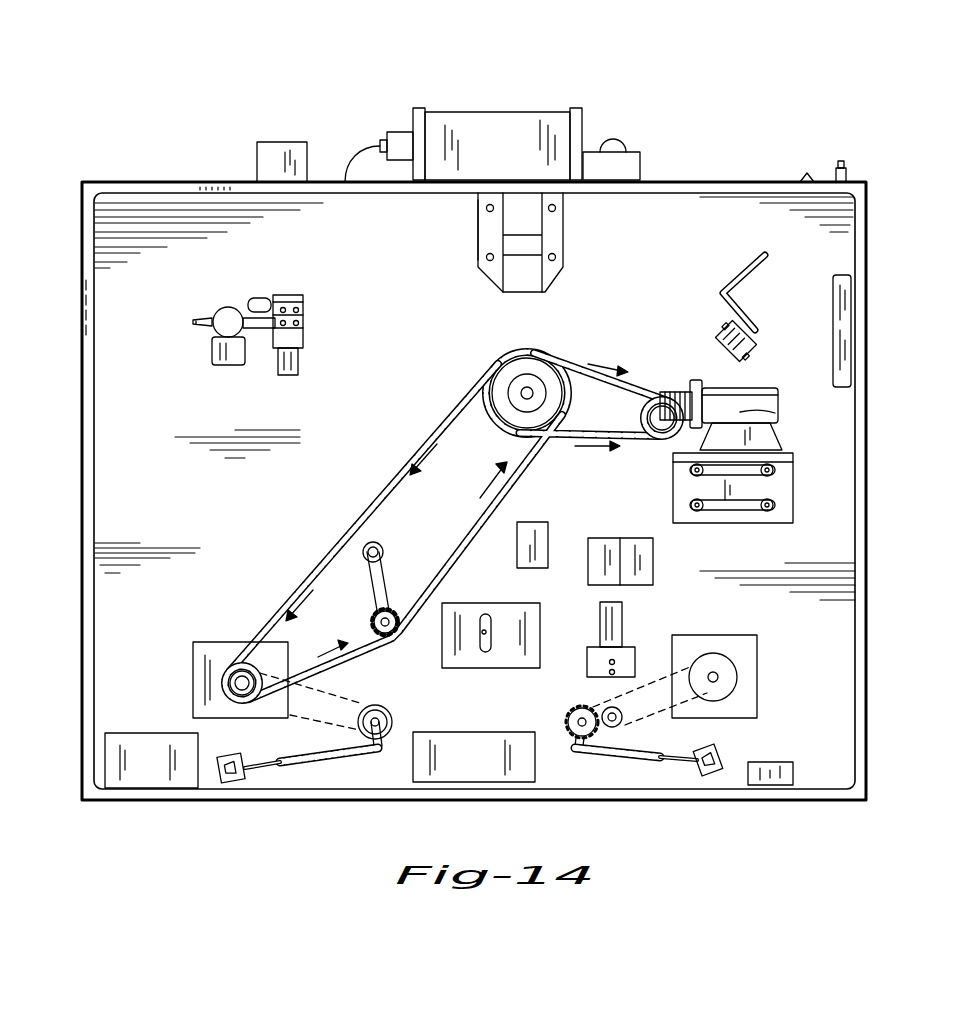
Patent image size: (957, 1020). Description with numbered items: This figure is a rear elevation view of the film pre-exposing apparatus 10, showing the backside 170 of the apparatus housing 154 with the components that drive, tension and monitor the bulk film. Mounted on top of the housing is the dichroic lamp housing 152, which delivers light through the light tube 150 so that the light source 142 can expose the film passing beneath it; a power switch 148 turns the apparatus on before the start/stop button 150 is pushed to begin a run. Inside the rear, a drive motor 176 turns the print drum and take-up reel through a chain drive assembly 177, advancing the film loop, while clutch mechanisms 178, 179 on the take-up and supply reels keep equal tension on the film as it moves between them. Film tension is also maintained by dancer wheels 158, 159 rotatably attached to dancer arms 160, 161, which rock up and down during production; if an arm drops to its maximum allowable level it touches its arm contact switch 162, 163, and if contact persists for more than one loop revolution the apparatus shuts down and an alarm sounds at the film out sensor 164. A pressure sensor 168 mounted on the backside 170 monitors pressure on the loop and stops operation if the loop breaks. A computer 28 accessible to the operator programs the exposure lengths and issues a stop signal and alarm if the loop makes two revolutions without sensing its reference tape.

The apparatus 10 is at (828, 104).
The computer 28 is at (418, 760).
The light source 142 is at (466, 226).
The power switch 148 is at (855, 172).
The start/stop button 150 is at (565, 244).
The dichroic lamp housing 152 is at (590, 103).
The apparatus housing 154 is at (80, 398).
The film dancer wheel 158 is at (393, 705).
The film dancer wheel 159 is at (565, 710).
The dancer arm 160 is at (340, 690).
The dancer arm 161 is at (655, 672).
The arm contact switch 162 is at (222, 764).
The arm contact switch 163 is at (714, 760).
The film out sensor 164 is at (777, 762).
The pressure sensor 168 is at (752, 325).
The backside 170 is at (806, 478).
The drive motor 176 is at (780, 408).
The chain drive assembly 177 is at (556, 342).
The clutch mechanism 178 is at (745, 652).
The clutch mechanism 179 is at (220, 650).